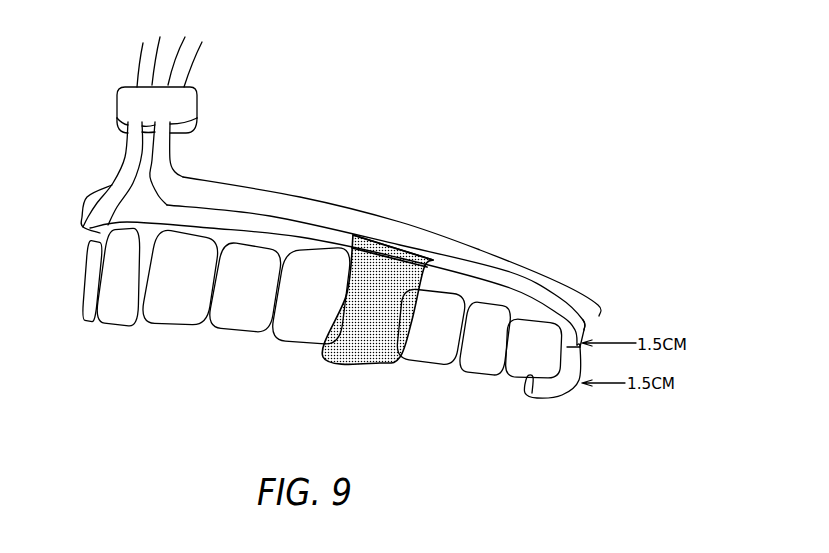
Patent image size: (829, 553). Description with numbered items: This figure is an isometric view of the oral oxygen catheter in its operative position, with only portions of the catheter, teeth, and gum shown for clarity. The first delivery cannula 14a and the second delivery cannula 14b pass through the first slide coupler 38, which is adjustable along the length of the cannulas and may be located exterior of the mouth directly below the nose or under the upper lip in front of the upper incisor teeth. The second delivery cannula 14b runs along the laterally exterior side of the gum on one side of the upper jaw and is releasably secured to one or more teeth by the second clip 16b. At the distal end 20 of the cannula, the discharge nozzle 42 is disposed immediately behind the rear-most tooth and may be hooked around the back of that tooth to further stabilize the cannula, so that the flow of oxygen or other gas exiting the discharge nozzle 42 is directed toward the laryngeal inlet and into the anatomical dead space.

The first delivery cannula 14a is at (118, 172).
The second delivery cannula 14b is at (313, 225).
The first slide coupler 38 is at (197, 108).
The second clip 16b is at (383, 348).
The distal end 20 is at (578, 345).
The discharge nozzle 42 is at (562, 395).